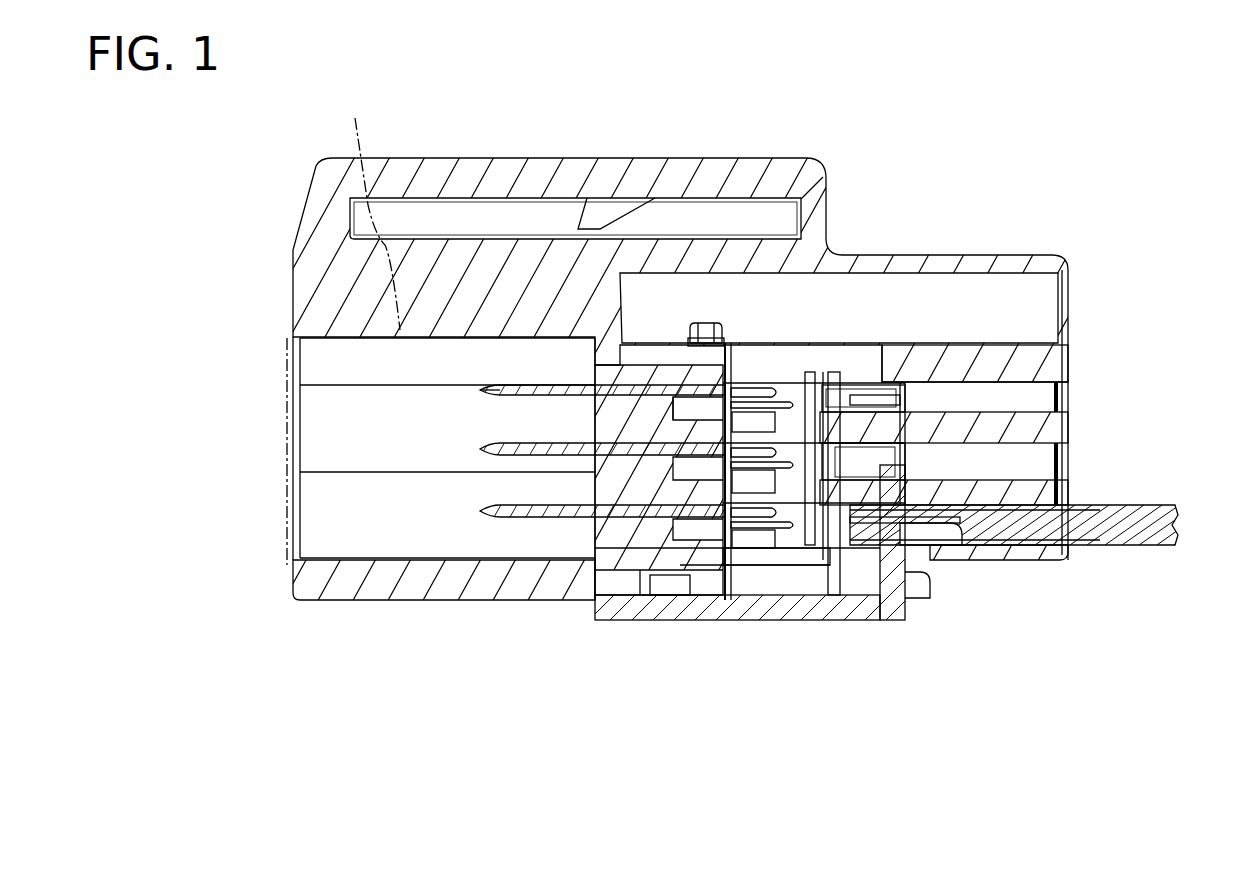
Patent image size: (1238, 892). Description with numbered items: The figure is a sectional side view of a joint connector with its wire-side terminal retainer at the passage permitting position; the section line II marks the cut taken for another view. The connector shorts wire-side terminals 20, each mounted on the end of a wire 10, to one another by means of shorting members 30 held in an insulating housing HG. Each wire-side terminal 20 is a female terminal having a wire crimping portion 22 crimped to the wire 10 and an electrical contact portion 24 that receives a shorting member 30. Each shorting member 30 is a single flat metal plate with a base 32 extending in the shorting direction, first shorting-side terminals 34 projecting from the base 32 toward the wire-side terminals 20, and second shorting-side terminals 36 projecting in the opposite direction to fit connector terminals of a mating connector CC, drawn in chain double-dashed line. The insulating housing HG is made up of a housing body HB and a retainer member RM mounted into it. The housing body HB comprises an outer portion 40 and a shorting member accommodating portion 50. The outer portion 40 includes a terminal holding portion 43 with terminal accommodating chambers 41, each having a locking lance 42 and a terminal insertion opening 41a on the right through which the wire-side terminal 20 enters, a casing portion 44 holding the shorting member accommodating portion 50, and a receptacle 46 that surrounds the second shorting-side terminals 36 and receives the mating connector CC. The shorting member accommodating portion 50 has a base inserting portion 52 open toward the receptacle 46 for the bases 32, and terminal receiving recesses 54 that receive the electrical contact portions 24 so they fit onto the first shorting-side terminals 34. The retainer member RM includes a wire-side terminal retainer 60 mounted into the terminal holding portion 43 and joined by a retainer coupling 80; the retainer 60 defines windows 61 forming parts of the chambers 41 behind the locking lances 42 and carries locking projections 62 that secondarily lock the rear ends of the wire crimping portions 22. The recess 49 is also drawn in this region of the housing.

The wire 10 is at (1138, 505).
The wire-side terminal 20 is at (810, 600).
The wire crimping portion 22 is at (883, 600).
The electrical contact portion 24 is at (662, 597).
The shorting member 30 is at (558, 440).
The base 32 is at (640, 388).
The first shorting-side terminal 34 is at (758, 385).
The second shorting-side terminal 36 is at (480, 390).
The outer portion 40 is at (535, 605).
The terminal accommodating chamber 41 is at (1005, 378).
The terminal insertion opening 41a is at (1080, 385).
The locking lance 42 is at (805, 372).
The terminal holding portion 43 is at (1038, 568).
The casing portion 44 is at (680, 338).
The receptacle 46 is at (378, 600).
The recess 49 is at (920, 590).
The shorting member accommodating portion 50 is at (590, 592).
The base inserting portion 52 is at (625, 598).
The terminal receiving recess 54 is at (706, 343).
The wire-side terminal retainer 60 is at (912, 408).
The window 61 is at (880, 405).
The locking projection 62 is at (840, 385).
The retainer coupling 80 is at (728, 598).
The mating connector CC is at (371, 210).
The housing body HB is at (594, 656).
The retainer member RM is at (855, 628).
The insulating housing HG is at (975, 648).
The section line II is at (280, 515).